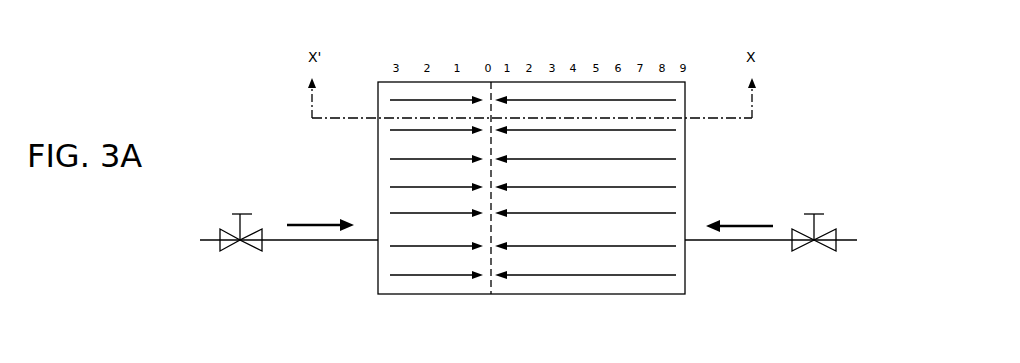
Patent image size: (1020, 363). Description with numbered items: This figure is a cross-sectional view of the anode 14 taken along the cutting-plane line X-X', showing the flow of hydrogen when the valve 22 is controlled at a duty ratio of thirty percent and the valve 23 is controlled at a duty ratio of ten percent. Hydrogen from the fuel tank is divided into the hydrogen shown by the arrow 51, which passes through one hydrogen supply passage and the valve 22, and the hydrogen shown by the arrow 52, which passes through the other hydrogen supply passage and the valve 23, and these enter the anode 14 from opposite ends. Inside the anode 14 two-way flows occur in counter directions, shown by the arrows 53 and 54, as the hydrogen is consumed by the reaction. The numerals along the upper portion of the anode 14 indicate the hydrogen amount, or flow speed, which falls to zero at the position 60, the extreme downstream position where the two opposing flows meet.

The anode 14 is at (520, 36).
The valve 22 is at (817, 215).
The valve 23 is at (246, 215).
The arrow 51 is at (743, 225).
The arrow 52 is at (320, 225).
The arrow 53 is at (637, 275).
The arrow 54 is at (425, 276).
The extreme downstream position 60 is at (492, 305).